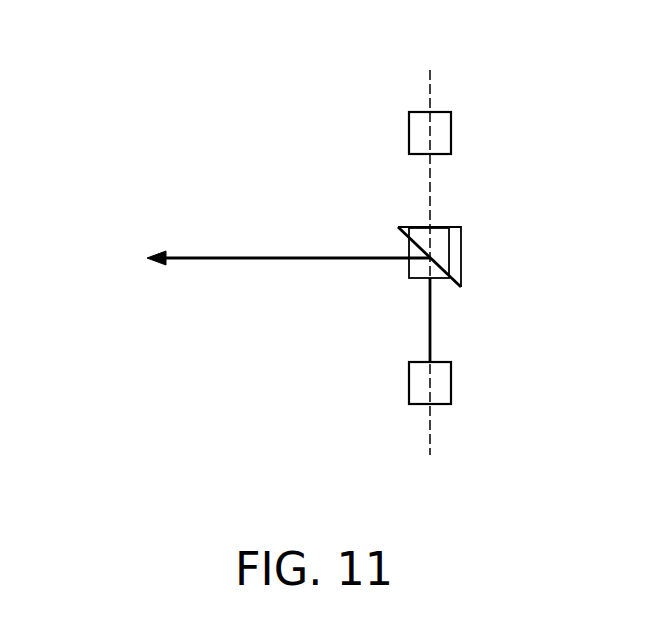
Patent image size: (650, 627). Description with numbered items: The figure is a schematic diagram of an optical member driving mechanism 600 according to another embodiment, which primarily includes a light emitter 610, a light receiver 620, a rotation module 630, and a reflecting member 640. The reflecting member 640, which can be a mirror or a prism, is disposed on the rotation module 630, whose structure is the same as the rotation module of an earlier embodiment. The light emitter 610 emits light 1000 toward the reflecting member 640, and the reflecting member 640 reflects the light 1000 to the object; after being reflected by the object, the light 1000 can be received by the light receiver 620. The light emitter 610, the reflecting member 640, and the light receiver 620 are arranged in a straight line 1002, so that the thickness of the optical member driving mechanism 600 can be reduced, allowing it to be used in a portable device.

The optical member driving mechanism 600 is at (78, 67).
The straight line 1002 is at (430, 85).
The light receiver 620 is at (451, 132).
The rotation module 630 is at (442, 226).
The reflecting member 640 is at (437, 275).
The light emitter 610 is at (451, 382).
The light 1000 is at (237, 256).